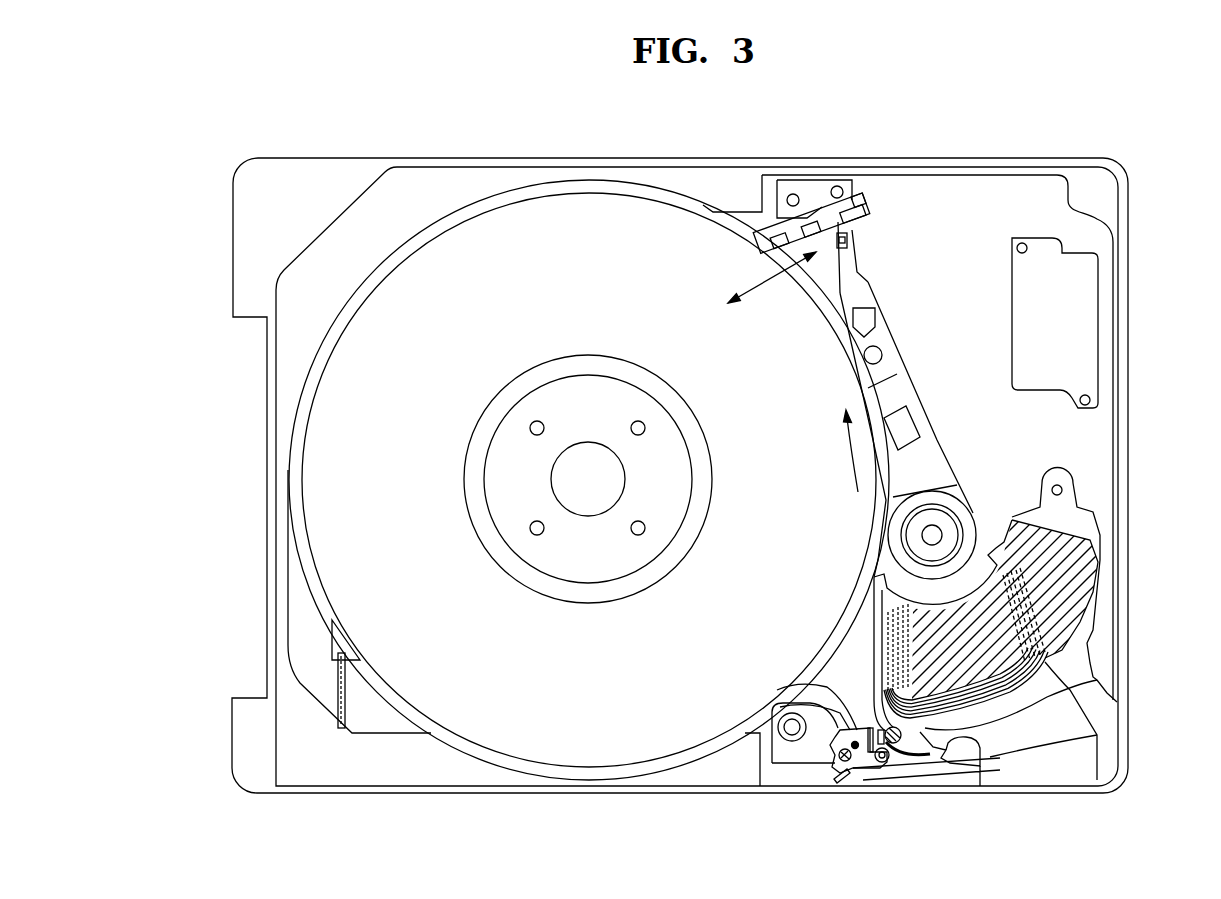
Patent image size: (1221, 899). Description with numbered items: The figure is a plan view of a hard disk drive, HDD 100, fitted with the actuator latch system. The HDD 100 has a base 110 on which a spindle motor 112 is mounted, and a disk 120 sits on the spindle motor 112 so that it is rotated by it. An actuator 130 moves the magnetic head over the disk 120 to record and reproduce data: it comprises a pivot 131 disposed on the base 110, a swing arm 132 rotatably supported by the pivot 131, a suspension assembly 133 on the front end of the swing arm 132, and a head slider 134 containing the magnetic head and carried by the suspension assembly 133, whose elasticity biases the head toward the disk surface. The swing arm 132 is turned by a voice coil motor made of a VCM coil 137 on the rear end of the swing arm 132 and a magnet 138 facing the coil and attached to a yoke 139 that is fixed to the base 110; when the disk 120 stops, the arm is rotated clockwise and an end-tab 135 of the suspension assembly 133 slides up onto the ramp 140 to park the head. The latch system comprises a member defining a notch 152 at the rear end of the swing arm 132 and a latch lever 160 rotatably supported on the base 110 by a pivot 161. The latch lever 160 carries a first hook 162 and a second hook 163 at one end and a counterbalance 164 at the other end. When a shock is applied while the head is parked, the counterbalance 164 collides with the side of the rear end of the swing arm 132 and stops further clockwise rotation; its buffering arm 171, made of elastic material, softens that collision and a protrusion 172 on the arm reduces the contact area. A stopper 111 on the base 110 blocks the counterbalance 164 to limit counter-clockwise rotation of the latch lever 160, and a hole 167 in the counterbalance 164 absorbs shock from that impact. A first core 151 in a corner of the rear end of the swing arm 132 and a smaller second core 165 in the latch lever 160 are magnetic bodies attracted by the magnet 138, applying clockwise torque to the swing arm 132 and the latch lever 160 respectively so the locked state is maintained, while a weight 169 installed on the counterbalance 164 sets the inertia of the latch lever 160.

The HDD 100 is at (210, 197).
The base 110 is at (650, 780).
The stopper 111 is at (853, 795).
The spindle motor 112 is at (510, 447).
The disk 120 is at (553, 212).
The actuator 130 is at (977, 466).
The pivot 131 is at (937, 530).
The swing arm 132 is at (915, 425).
The suspension assembly 133 is at (858, 272).
The head slider 134 is at (862, 243).
The end-tab 135 is at (836, 232).
The VCM coil 137 is at (1045, 673).
The magnet 138 is at (1088, 556).
The yoke 139 is at (1093, 520).
The ramp 140 is at (792, 222).
The first core 151 is at (872, 690).
The notch 152 is at (927, 762).
The latch lever 160 is at (905, 778).
The pivot 161 is at (878, 768).
The first hook 162 is at (948, 755).
The second hook 163 is at (970, 757).
The counterbalance 164 is at (783, 703).
The second core 165 is at (835, 770).
The hole 167 is at (838, 772).
The weight 169 is at (832, 778).
The buffering arm 171 is at (850, 722).
The protrusion 172 is at (877, 725).